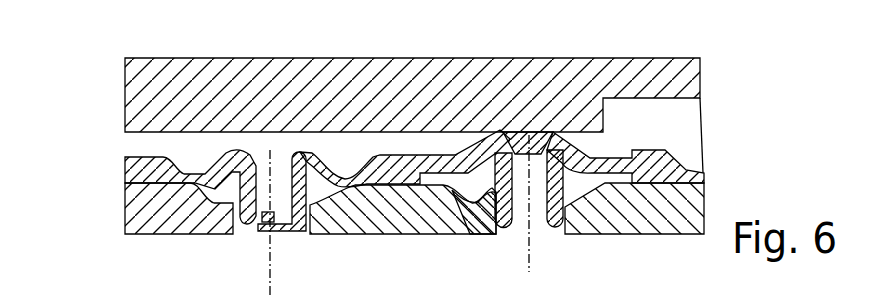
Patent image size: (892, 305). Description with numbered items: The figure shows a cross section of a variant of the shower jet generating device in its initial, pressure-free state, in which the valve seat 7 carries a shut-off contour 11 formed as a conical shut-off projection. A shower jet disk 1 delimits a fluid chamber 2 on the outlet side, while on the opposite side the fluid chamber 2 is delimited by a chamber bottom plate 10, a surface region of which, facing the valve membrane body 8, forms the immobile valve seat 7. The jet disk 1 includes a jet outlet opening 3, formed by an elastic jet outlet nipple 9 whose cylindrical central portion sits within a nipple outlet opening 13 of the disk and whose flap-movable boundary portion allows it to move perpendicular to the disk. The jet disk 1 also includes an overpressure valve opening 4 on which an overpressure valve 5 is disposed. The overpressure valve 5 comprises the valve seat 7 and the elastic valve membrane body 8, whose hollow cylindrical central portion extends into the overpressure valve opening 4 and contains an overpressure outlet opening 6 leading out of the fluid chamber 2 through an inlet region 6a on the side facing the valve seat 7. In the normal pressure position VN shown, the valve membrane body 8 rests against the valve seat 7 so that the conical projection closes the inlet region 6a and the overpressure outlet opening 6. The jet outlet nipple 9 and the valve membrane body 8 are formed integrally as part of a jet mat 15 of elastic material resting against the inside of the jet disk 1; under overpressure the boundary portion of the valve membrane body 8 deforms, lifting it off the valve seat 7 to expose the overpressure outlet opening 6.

The shower jet disk 1 is at (133, 209).
The fluid chamber 2 is at (138, 143).
The jet outlet opening 3 is at (260, 221).
The overpressure valve opening 4 is at (563, 231).
The overpressure valve 5 is at (550, 154).
The overpressure outlet opening 6 is at (522, 218).
The inlet region 6a is at (503, 133).
The valve seat 7 is at (538, 148).
The valve membrane body 8 is at (478, 203).
The jet outlet nipple 9 is at (287, 229).
The chamber bottom plate 10 is at (137, 101).
The shut-off contour 11 is at (634, 258).
The nipple outlet opening 13 is at (236, 233).
The jet mat 15 is at (133, 173).
The normal pressure position VN is at (490, 212).